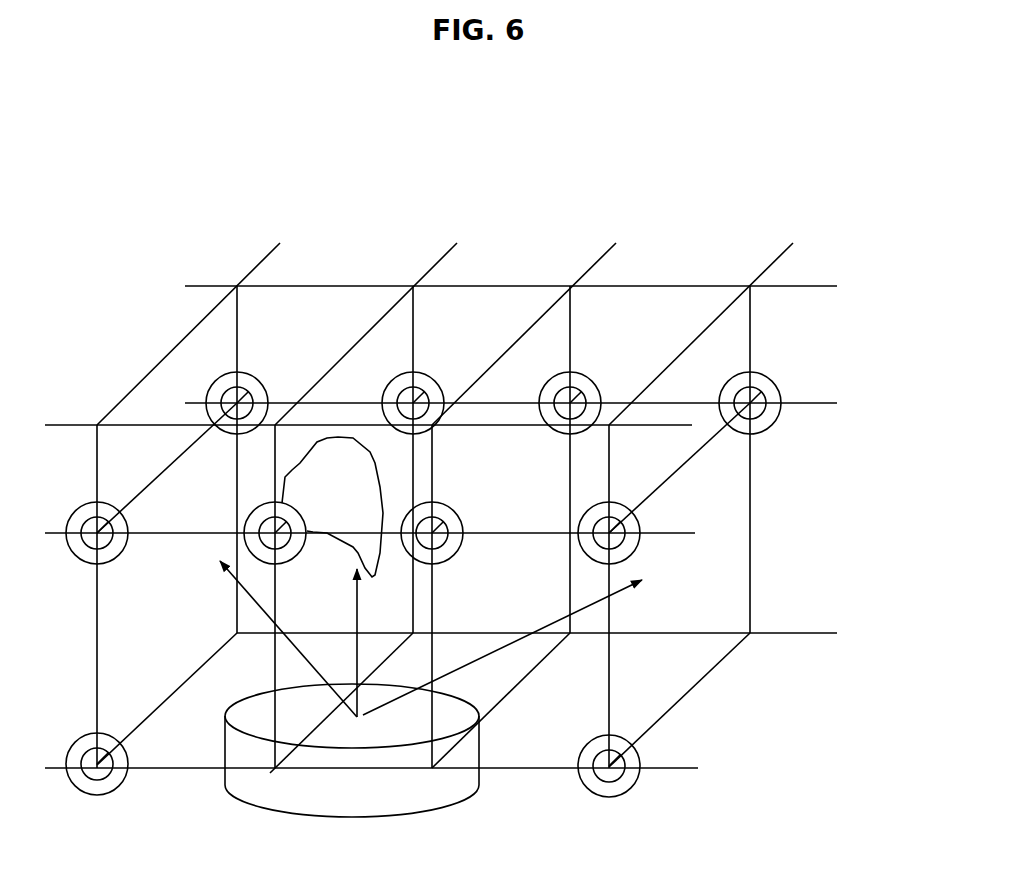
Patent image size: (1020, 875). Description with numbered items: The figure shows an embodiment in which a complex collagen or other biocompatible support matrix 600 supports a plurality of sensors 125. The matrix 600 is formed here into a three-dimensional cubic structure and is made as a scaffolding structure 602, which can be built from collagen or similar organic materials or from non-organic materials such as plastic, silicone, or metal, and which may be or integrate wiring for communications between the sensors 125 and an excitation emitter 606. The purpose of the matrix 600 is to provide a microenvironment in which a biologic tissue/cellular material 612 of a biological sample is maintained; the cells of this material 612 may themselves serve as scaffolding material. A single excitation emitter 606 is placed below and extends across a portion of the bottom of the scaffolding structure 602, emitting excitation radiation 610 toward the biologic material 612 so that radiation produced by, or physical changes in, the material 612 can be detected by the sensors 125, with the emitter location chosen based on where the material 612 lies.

The support matrix 600 is at (674, 158).
The scaffolding structure 602 is at (693, 690).
The excitation emitter 606 is at (422, 810).
The excitation radiation 610 is at (480, 657).
The biologic tissue/cellular material 612 is at (338, 437).
The sensor 125 is at (769, 432).